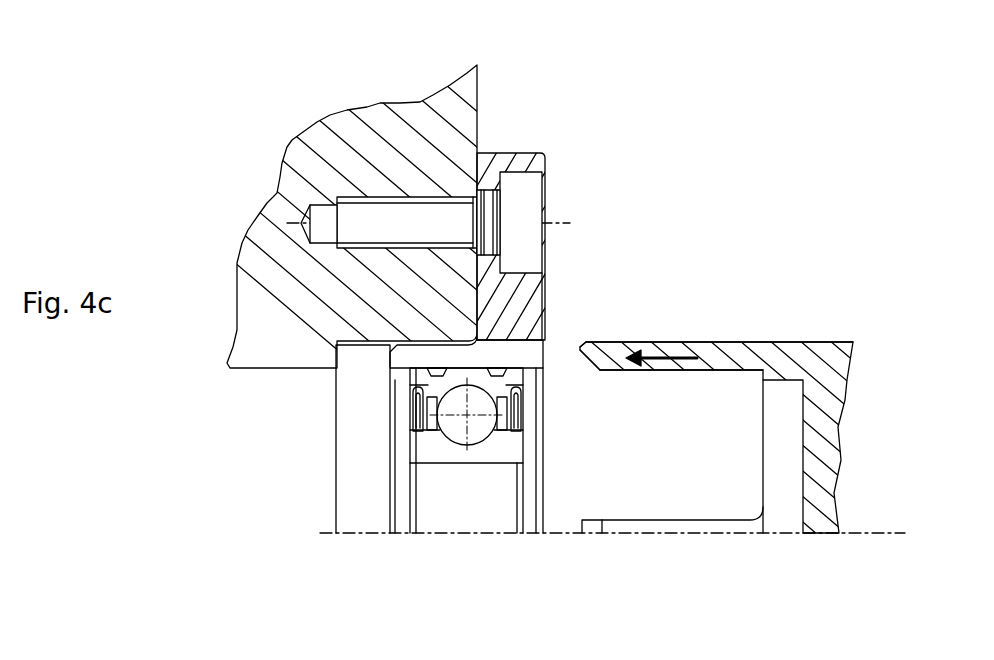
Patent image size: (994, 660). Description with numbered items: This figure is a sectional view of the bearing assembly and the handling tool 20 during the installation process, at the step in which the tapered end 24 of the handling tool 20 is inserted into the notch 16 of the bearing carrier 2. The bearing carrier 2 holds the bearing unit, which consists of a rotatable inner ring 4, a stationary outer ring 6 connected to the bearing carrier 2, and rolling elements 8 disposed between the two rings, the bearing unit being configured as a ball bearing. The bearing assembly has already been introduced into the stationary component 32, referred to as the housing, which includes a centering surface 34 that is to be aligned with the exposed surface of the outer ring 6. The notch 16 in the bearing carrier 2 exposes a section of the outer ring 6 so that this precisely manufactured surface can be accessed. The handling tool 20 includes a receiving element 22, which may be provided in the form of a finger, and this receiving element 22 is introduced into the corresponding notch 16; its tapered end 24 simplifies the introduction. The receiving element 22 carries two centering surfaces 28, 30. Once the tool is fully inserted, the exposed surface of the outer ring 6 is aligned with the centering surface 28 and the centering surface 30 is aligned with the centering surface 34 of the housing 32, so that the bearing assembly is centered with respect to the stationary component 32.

The bearing carrier 2 is at (527, 165).
The inner ring 4 is at (510, 453).
The outer ring 6 is at (500, 387).
The rolling elements 8 is at (487, 427).
The notch 16 is at (520, 357).
The handling tool 20 is at (832, 362).
The receiving element 22 is at (668, 345).
The tapered end 24 is at (581, 346).
The centering surface 28 is at (717, 373).
The centering surface 30 is at (723, 342).
The stationary component 32 is at (413, 115).
The centering surface 34 is at (421, 342).